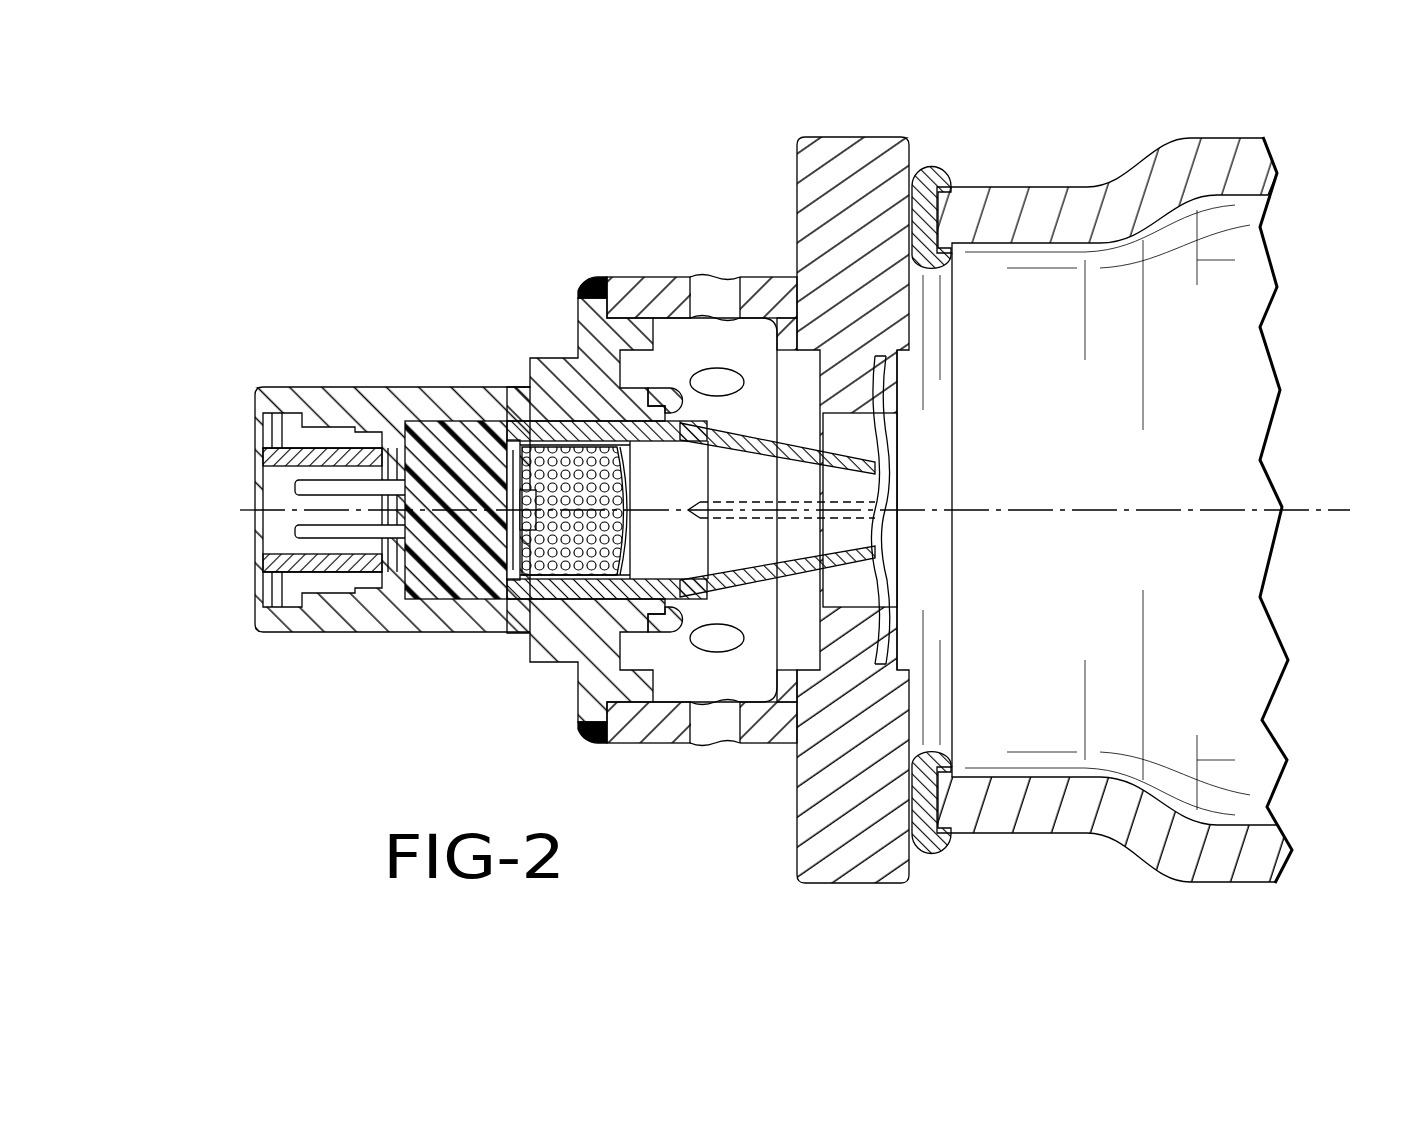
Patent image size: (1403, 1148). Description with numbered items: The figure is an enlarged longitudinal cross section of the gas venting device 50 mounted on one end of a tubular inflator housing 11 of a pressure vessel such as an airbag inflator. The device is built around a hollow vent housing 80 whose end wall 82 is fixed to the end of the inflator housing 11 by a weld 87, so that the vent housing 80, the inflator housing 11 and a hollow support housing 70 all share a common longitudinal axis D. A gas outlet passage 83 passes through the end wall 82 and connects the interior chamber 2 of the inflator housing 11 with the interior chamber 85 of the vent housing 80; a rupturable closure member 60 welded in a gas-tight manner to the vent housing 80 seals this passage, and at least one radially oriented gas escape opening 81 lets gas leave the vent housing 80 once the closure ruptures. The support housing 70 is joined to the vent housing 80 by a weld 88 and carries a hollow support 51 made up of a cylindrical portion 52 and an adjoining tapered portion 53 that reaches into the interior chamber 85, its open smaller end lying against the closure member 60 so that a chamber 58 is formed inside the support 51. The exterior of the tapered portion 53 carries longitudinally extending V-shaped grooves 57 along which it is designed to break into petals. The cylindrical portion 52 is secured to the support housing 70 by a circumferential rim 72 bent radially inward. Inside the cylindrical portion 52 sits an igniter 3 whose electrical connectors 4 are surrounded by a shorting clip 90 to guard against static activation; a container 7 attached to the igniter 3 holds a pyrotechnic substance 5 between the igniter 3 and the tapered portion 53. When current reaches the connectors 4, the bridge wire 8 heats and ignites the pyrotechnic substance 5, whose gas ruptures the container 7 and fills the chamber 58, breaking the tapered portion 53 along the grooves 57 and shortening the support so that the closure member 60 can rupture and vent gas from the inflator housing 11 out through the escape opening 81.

The interior chamber of the inflator housing 2 is at (1113, 375).
The igniter 3 is at (443, 585).
The electrical connectors 4 is at (312, 488).
The pyrotechnic substance 5 is at (575, 548).
The container 7 is at (517, 453).
The bridge wire 8 is at (520, 525).
The tubular inflator housing 11 is at (1123, 822).
The gas venting device 50 is at (378, 230).
The hollow support 51 is at (522, 415).
The cylindrical portion 52 is at (552, 590).
The tapered portion 53 is at (783, 587).
The longitudinally extending grooves 57 is at (843, 452).
The chamber 58 is at (757, 547).
The rupturable closure member 60 is at (885, 543).
The hollow support housing 70 is at (566, 320).
The circumferential rim 72 is at (596, 733).
The vent housing 80 is at (647, 268).
The gas escape opening 81 is at (712, 292).
The end wall 82 is at (855, 135).
The gas outlet passage 83 is at (890, 522).
The interior chamber of the vent housing 85 is at (748, 352).
The weld 87 is at (928, 172).
The weld 88 is at (585, 280).
The shorting clip 90 is at (285, 455).
The longitudinal axis D is at (1170, 510).